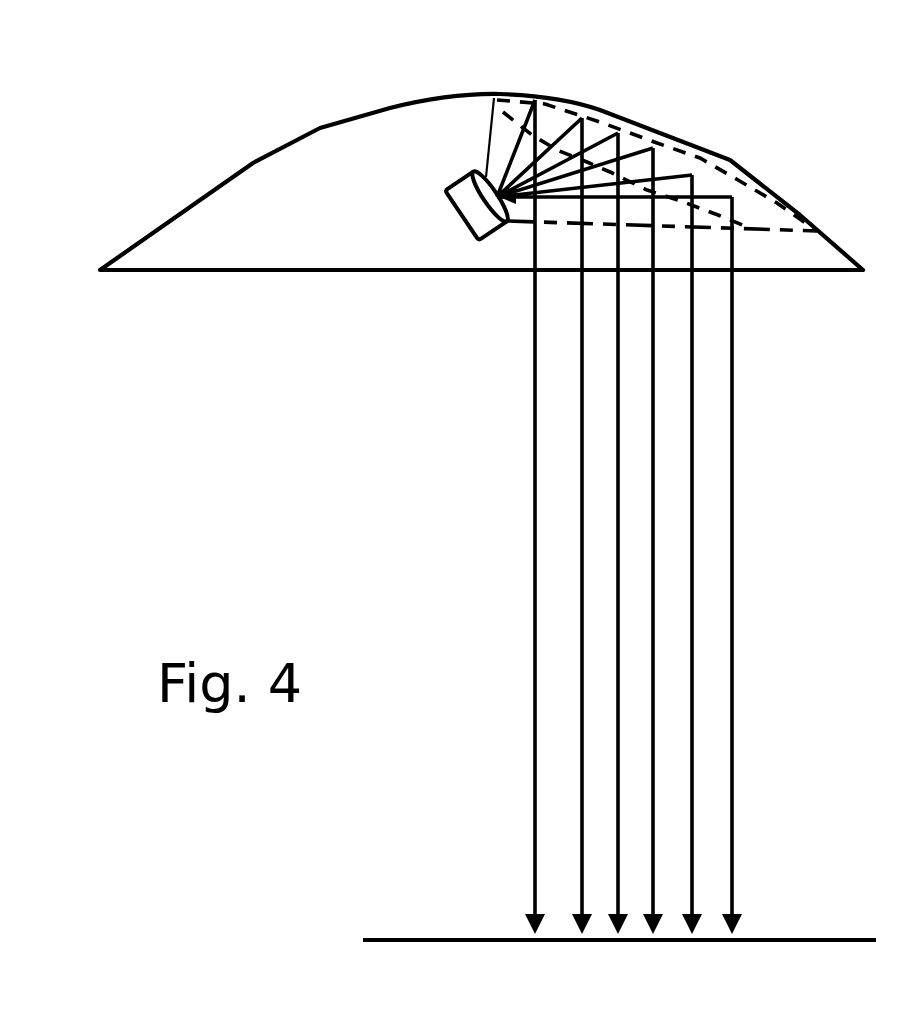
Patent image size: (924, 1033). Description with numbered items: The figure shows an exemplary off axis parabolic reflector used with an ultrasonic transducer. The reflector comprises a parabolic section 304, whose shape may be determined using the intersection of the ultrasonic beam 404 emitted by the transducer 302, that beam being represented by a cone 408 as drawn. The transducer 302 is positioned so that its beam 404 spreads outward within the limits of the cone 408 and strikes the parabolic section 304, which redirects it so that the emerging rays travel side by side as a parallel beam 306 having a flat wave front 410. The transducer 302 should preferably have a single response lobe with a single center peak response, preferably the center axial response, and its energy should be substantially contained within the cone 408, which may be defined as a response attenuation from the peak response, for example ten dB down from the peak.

The transducer 302 is at (450, 213).
The parabolic section 304 is at (258, 162).
The parallel beam 306 is at (533, 518).
The ultrasonic beam 404 is at (517, 140).
The cone 408 is at (490, 146).
The flat wave front 410 is at (410, 945).